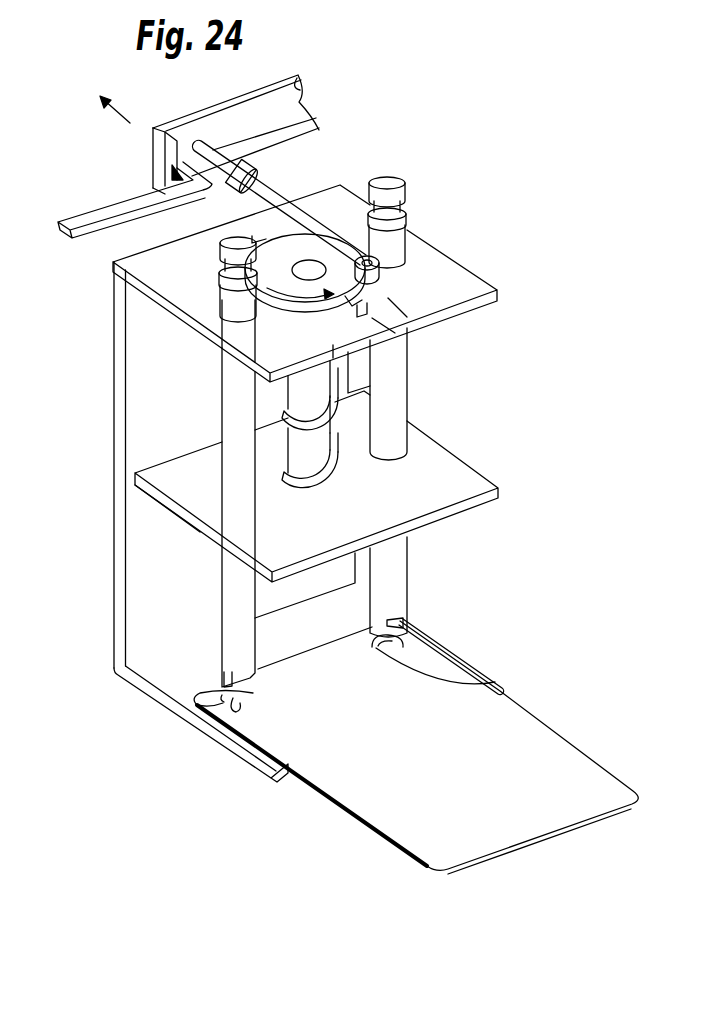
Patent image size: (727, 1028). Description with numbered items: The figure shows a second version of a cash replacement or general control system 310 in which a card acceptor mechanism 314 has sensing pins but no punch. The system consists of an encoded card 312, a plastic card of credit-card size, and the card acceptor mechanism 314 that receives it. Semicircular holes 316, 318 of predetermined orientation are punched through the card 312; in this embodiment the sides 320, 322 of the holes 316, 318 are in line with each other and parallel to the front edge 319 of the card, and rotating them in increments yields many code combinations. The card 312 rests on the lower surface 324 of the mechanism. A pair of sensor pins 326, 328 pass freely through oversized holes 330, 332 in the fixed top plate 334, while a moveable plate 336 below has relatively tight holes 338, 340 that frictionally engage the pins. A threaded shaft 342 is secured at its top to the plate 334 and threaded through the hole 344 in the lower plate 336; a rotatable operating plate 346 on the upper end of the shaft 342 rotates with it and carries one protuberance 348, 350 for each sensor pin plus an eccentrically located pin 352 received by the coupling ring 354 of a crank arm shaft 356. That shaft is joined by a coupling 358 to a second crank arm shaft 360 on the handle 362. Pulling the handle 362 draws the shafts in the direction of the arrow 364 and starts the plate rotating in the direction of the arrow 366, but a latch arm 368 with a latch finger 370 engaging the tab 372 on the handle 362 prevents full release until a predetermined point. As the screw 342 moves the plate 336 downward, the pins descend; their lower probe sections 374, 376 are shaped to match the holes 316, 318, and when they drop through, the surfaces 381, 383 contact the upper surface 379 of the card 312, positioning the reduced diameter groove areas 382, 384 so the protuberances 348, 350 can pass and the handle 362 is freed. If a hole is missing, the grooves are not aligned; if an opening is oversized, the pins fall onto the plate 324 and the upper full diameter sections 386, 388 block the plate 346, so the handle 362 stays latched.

The control system 310 is at (58, 412).
The encoded card 312 is at (534, 740).
The card acceptor mechanism 314 is at (152, 422).
The semicircular hole 316 is at (217, 702).
The semicircular hole 318 is at (486, 676).
The front edge of the card 319 is at (362, 594).
The side of hole 320 is at (230, 712).
The side of hole 322 is at (410, 648).
The lower surface 324 is at (186, 684).
The sensor pin 326 is at (220, 600).
The sensor pin 328 is at (402, 549).
The hole in fixed top plate 330 is at (233, 354).
The hole in fixed top plate 332 is at (398, 267).
The fixed top plate 334 is at (481, 296).
The moveable plate 336 is at (476, 486).
The hole in moveable plate 338 is at (205, 500).
The hole in moveable plate 340 is at (409, 445).
The threaded shaft 342 is at (340, 432).
The threaded hole 344 is at (338, 485).
The rotatable operating plate 346 is at (382, 323).
The protuberance 348 is at (370, 348).
The protuberance 350 is at (256, 236).
The eccentrically located pin 352 is at (382, 262).
The coupling ring 354 is at (370, 302).
The crank arm shaft 356 is at (258, 190).
The coupling 358 is at (262, 172).
The second crank arm shaft 360 is at (212, 148).
The handle 362 is at (301, 88).
The arrow 364 is at (112, 117).
The arrow 366 is at (350, 372).
The latch arm 368 is at (108, 209).
The latch finger 370 is at (180, 157).
The tab 372 is at (160, 165).
The lower probe section 374 is at (222, 680).
The lower probe section 376 is at (406, 630).
The surface of the card 379 is at (377, 820).
The surface 381 is at (226, 676).
The reduced diameter groove area 382 is at (233, 320).
The surface 383 is at (405, 618).
The reduced diameter groove area 384 is at (401, 220).
The upper full diameter section 386 is at (219, 282).
The upper full diameter section 388 is at (400, 196).